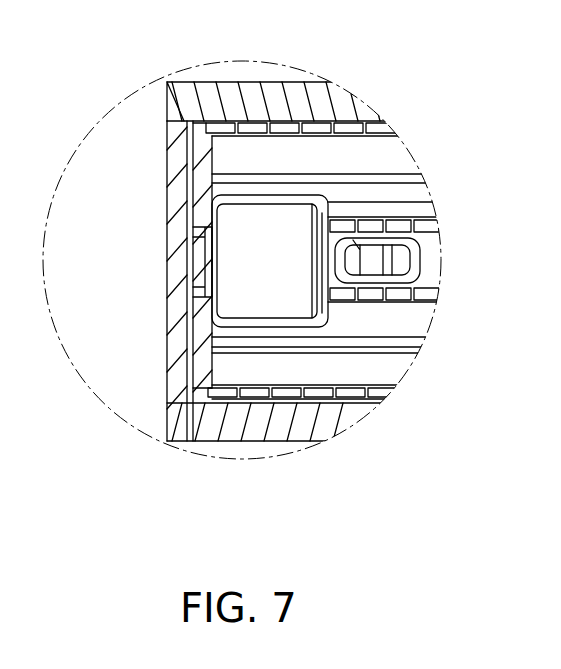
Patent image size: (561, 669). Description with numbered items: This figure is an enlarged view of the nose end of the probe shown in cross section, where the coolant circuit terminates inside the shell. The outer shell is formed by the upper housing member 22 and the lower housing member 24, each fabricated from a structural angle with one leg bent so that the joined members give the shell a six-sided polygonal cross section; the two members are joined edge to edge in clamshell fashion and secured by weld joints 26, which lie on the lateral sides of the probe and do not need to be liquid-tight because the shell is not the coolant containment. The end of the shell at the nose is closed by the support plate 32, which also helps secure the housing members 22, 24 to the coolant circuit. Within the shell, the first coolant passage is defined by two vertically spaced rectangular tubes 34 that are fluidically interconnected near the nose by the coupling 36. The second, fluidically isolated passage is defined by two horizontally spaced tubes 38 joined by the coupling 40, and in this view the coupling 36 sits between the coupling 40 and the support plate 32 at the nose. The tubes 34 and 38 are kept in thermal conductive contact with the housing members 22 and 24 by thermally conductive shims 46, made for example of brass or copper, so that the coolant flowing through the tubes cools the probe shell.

The housing member 22 is at (226, 106).
The housing member 24 is at (232, 428).
The weld joint 26 is at (184, 120).
The support plate 32 is at (182, 293).
The tube 34 is at (387, 159).
The coupling 36 is at (322, 213).
The tube 38 is at (428, 257).
The coupling 40 is at (417, 275).
The thermally conductive shim 46 is at (323, 124).